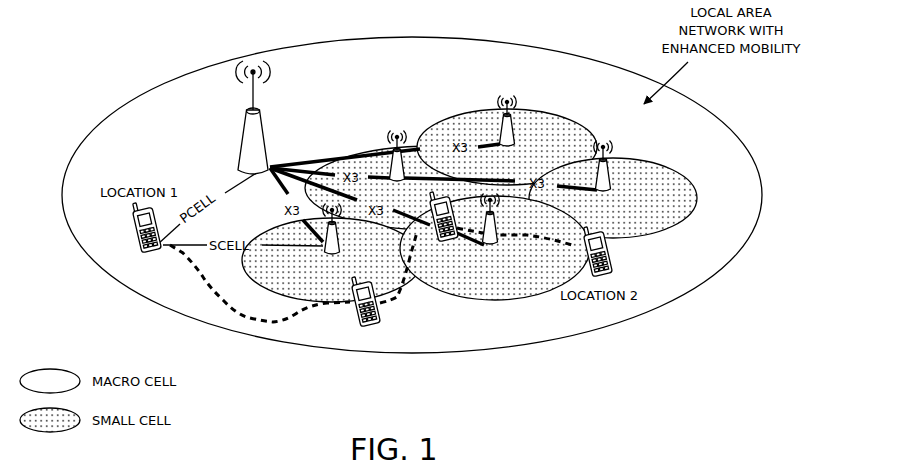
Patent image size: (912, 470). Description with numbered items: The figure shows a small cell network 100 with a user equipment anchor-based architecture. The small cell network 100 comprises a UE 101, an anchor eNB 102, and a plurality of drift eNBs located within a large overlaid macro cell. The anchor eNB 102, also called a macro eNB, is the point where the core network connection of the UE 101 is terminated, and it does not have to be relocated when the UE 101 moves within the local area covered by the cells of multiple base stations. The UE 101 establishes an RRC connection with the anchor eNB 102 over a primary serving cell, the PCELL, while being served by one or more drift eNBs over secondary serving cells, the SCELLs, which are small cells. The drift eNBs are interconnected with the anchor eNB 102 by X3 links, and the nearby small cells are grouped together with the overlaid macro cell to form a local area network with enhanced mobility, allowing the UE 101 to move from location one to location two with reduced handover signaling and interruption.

The small cell network 100 is at (141, 32).
The user equipment (UE) 101 is at (167, 268).
The anchor eNB 102 is at (244, 128).